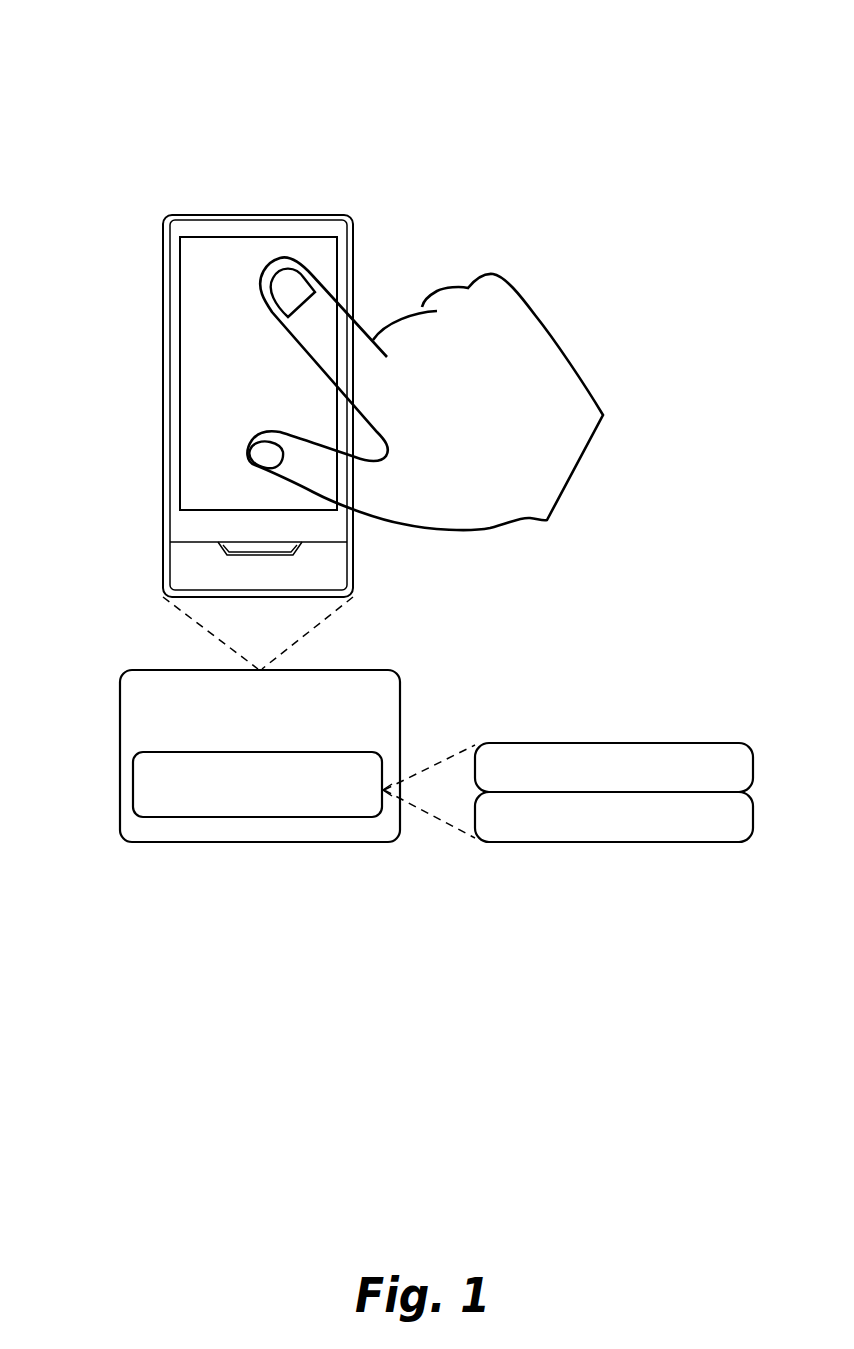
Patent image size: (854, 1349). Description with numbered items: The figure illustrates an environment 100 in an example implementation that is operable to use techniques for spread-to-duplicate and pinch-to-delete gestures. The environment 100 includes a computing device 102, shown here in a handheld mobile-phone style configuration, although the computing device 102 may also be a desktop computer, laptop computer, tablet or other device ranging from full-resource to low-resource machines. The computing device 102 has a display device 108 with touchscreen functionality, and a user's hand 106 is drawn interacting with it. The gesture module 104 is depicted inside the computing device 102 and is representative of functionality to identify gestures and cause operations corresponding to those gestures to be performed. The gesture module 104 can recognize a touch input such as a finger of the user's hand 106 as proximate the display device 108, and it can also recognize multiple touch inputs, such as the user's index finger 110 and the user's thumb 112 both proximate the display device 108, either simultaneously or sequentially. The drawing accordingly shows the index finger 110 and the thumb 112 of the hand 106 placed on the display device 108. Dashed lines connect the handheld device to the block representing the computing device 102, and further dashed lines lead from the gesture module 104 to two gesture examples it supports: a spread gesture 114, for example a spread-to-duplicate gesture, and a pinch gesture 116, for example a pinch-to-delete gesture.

The environment 100 is at (110, 64).
The computing device 102 is at (241, 729).
The gesture module 104 is at (313, 811).
The user's hand 106 is at (486, 413).
The display device 108 is at (281, 395).
The index finger 110 is at (266, 276).
The thumb 112 is at (262, 433).
The spread gesture 114 is at (711, 784).
The pinch gesture 116 is at (705, 831).